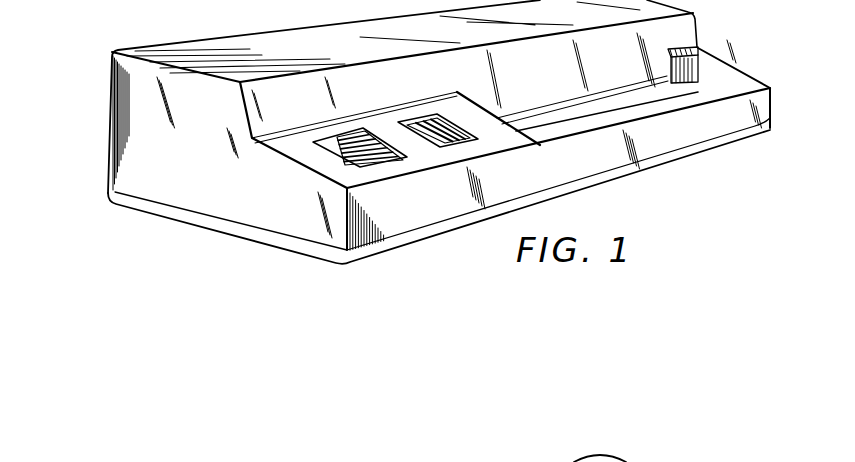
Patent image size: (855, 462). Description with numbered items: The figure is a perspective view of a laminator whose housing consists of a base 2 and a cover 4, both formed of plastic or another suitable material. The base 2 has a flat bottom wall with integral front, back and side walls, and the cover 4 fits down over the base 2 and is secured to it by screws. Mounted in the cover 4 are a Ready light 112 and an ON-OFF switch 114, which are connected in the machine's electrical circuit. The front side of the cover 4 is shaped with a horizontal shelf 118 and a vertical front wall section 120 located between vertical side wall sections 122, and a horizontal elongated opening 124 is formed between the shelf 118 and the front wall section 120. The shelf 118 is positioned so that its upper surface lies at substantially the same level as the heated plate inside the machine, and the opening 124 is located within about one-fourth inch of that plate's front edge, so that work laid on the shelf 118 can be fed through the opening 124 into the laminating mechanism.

The base 2 is at (219, 242).
The cover 4 is at (100, 134).
The Ready light 112 is at (456, 108).
The ON-OFF switch 114 is at (384, 131).
The horizontal shelf 118 is at (665, 104).
The vertical front wall section 120 is at (615, 63).
The vertical side wall sections 122 is at (701, 81).
The horizontal elongated opening 124 is at (563, 104).